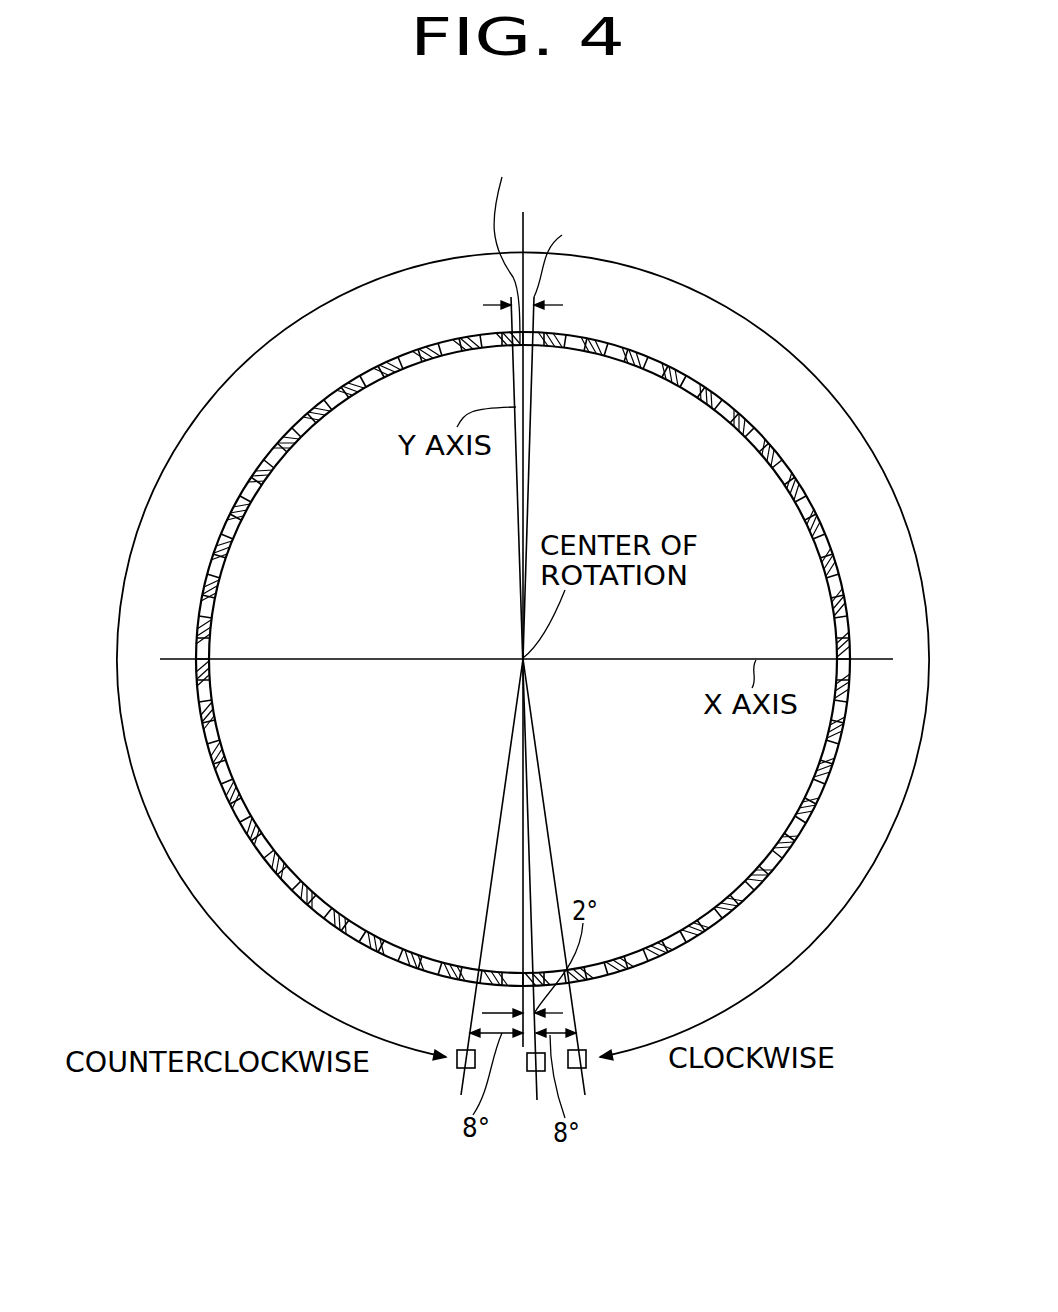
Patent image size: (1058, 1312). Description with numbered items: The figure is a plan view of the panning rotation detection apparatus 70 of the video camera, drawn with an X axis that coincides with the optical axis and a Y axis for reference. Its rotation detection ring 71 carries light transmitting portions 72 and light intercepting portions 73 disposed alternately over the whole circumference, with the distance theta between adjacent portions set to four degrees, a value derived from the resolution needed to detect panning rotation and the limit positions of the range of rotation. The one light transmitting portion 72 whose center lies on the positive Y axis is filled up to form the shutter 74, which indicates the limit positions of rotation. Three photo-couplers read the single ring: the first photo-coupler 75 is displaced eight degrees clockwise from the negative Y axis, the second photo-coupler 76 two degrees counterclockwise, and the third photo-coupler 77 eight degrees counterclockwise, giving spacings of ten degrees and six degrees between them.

The panning rotation detection apparatus 70 is at (257, 232).
The rotation detection ring 71 is at (297, 430).
The light transmitting portions 72 is at (393, 367).
The light intercepting portions 73 is at (636, 352).
The shutter 74 is at (513, 297).
The first photo-coupler 75 is at (457, 1066).
The second photo-coupler 76 is at (532, 1072).
The third photo-coupler 77 is at (582, 1070).